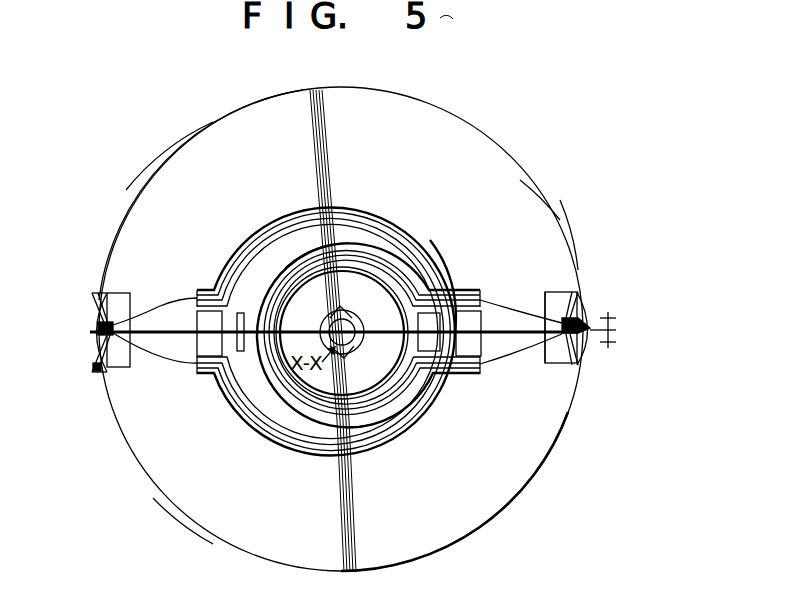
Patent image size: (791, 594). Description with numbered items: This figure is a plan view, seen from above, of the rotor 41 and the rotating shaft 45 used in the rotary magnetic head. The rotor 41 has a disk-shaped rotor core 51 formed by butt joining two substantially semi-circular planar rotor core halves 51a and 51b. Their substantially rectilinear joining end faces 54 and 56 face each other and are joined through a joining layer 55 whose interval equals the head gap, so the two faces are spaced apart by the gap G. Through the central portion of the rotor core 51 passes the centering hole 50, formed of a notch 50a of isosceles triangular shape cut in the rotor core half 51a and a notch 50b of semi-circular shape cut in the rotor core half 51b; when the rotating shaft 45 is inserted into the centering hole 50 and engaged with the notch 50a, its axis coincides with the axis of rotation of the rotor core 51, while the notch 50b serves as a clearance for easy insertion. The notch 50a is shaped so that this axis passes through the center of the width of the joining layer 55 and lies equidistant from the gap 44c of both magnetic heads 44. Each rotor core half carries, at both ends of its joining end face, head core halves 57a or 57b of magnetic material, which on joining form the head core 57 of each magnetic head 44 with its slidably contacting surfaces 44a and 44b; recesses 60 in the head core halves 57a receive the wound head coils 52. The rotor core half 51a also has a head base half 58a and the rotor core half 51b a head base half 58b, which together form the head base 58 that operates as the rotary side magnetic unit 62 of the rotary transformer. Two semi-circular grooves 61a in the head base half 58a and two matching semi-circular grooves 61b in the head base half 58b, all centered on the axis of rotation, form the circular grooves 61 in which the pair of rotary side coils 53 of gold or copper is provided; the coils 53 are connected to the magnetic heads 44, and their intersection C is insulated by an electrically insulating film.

The rotor 41 is at (512, 130).
The magnetic head 44 is at (92, 292).
The slidably contacting surface 44a is at (92, 318).
The slidably contacting surface 44b is at (90, 342).
The gap 44c is at (592, 338).
The rotating shaft 45 is at (347, 326).
The centering hole 50 is at (327, 355).
The notch 50a is at (338, 318).
The notch 50b is at (352, 352).
The rotor core 51 is at (130, 163).
The rotor core half 51a is at (202, 155).
The rotor core half 51b is at (172, 488).
The head coil 52 is at (95, 372).
The rotary side coil 53 is at (282, 378).
The joining end face 54 is at (165, 333).
The joining layer 55 is at (222, 358).
The joining end face 56 is at (153, 338).
The head core 57 is at (598, 302).
The head core half 57a is at (122, 300).
The head core half 57b is at (123, 368).
The head base 58 is at (582, 240).
The head base half 58a is at (547, 206).
The head base half 58b is at (525, 478).
The recess 60 is at (98, 327).
The circular groove 61 is at (387, 285).
The semi-circular groove 61a is at (310, 262).
The semi-circular groove 61b is at (378, 415).
The rotary side magnetic unit 62 is at (407, 398).
The intersection C is at (446, 300).
The gap G is at (611, 330).